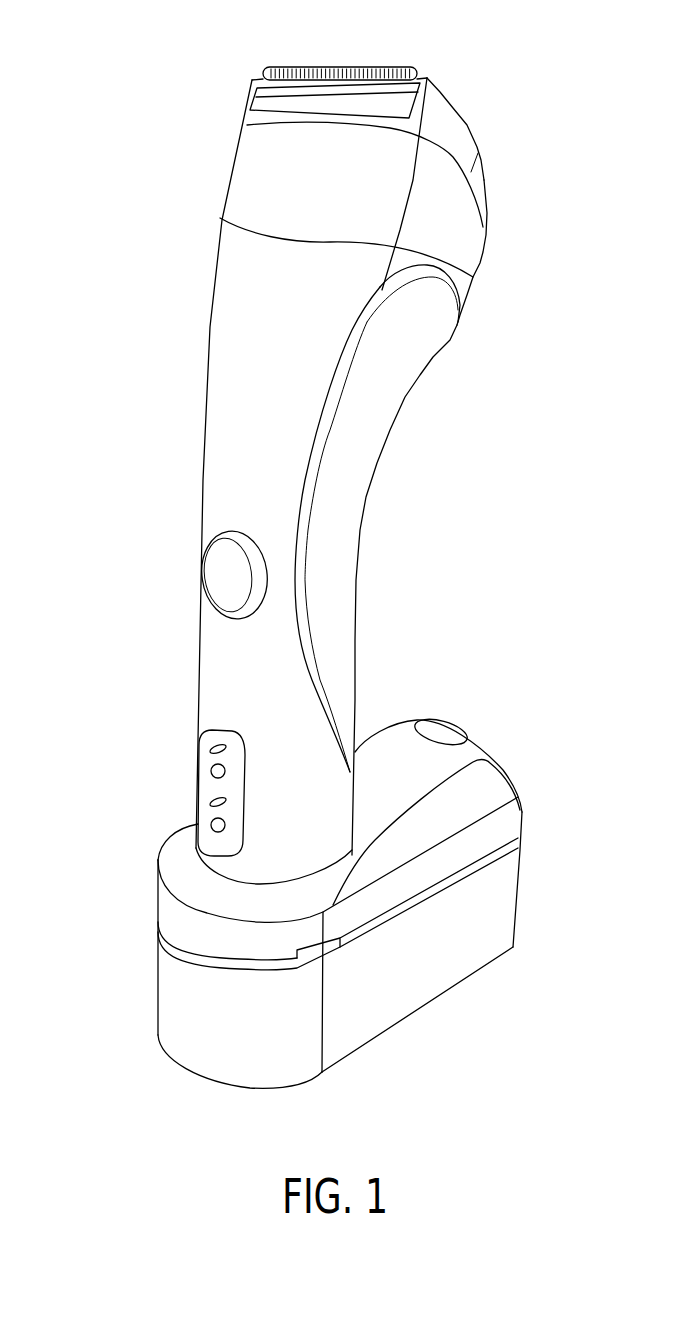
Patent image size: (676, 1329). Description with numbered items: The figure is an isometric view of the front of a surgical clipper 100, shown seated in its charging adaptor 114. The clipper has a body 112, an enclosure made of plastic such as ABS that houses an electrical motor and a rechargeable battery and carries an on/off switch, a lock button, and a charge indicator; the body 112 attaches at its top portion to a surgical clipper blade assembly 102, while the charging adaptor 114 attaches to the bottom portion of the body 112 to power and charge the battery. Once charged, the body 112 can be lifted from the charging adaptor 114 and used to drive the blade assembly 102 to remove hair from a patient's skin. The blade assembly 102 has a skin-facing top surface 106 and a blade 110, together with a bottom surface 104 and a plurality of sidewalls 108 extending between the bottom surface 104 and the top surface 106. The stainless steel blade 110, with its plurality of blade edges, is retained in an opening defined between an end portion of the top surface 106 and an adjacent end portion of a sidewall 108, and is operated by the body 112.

The surgical clipper 100 is at (126, 86).
The surgical clipper blade assembly 102 is at (481, 122).
The bottom surface 104 is at (488, 222).
The top surface 106 is at (482, 154).
The sidewalls 108 is at (482, 193).
The blade 110 is at (292, 70).
The body 112 is at (200, 323).
The charging adaptor 114 is at (148, 896).